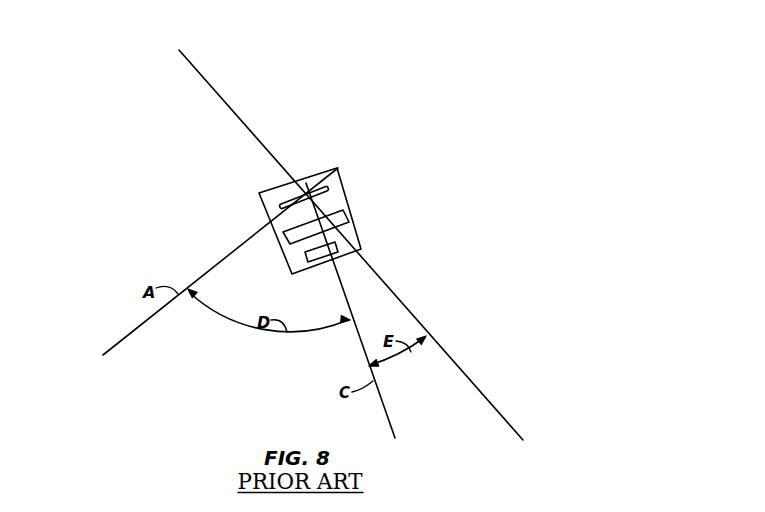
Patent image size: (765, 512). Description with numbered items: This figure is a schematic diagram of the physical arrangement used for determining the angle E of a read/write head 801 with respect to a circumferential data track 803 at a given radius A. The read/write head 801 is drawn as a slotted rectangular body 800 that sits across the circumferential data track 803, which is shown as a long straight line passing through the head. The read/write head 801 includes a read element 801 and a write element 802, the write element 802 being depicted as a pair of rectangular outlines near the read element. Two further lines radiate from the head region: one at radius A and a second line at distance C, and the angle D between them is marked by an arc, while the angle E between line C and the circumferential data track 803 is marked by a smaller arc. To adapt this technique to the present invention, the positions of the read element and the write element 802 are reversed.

The planar antenna element (patch) 800 is at (342, 198).
The read/write head 801 is at (319, 208).
The write element 802 is at (346, 229).
The circumferential data track 803 is at (227, 101).